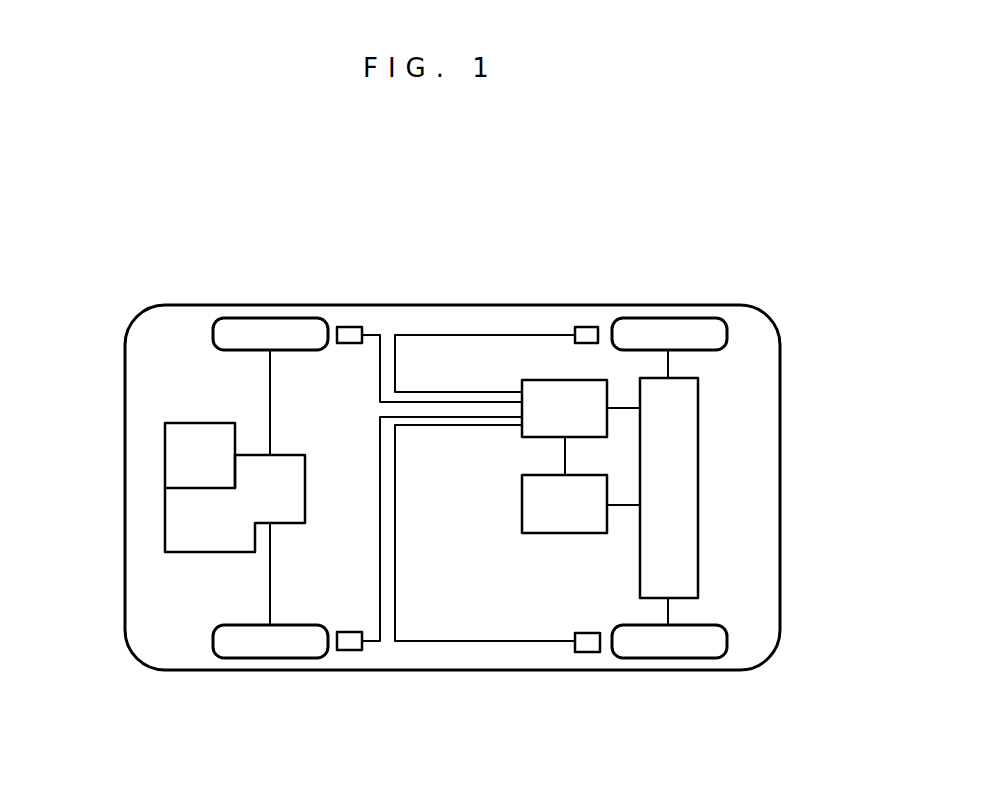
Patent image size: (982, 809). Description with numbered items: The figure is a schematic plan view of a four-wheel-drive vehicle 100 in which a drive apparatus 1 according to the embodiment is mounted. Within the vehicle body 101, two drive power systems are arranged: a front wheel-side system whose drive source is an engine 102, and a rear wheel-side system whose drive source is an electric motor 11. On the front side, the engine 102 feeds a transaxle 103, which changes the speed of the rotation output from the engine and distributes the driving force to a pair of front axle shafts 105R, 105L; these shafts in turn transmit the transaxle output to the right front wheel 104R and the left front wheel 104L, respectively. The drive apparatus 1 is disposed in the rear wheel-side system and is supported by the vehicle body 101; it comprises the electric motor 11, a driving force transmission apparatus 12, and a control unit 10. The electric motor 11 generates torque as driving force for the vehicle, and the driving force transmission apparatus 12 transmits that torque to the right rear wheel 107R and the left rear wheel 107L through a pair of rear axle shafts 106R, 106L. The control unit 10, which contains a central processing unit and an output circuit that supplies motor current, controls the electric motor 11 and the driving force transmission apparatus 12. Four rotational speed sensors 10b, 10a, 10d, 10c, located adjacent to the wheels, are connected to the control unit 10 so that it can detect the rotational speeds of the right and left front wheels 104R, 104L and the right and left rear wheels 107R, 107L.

The drive apparatus 1 is at (572, 320).
The control unit 10 is at (548, 380).
The rotational speed sensor 10a is at (349, 650).
The rotational speed sensor 10b is at (350, 327).
The rotational speed sensor 10c is at (586, 652).
The rotational speed sensor 10d is at (586, 327).
The electric motor 11 is at (548, 475).
The driving force transmission apparatus 12 is at (640, 575).
The four-wheel-drive vehicle 100 is at (140, 278).
The vehicle body 101 is at (780, 385).
The engine 102 is at (200, 423).
The transaxle 103 is at (200, 552).
The right front wheel 104R is at (270, 318).
The left front wheel 104L is at (270, 658).
The front axle shaft 105R is at (270, 408).
The front axle shaft 105L is at (270, 577).
The rear axle shaft 106R is at (668, 362).
The rear axle shaft 106L is at (668, 612).
The right rear wheel 107R is at (668, 318).
The left rear wheel 107L is at (668, 658).